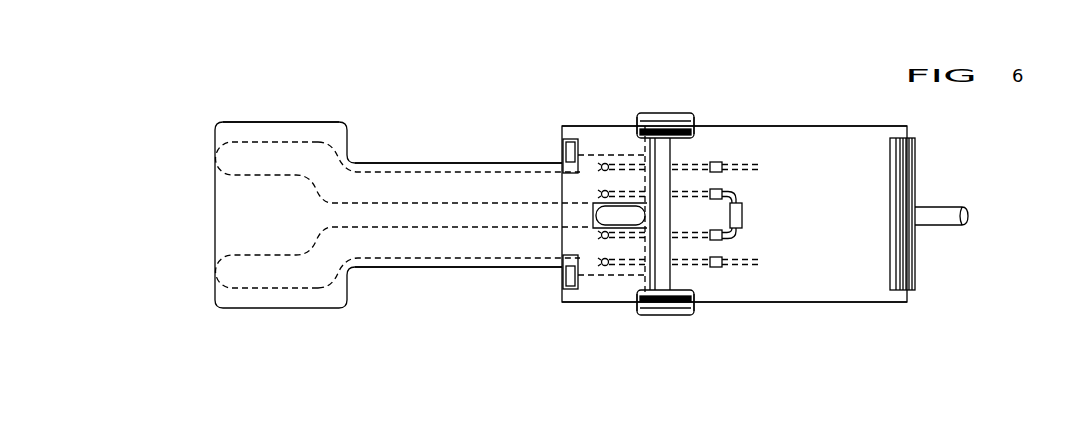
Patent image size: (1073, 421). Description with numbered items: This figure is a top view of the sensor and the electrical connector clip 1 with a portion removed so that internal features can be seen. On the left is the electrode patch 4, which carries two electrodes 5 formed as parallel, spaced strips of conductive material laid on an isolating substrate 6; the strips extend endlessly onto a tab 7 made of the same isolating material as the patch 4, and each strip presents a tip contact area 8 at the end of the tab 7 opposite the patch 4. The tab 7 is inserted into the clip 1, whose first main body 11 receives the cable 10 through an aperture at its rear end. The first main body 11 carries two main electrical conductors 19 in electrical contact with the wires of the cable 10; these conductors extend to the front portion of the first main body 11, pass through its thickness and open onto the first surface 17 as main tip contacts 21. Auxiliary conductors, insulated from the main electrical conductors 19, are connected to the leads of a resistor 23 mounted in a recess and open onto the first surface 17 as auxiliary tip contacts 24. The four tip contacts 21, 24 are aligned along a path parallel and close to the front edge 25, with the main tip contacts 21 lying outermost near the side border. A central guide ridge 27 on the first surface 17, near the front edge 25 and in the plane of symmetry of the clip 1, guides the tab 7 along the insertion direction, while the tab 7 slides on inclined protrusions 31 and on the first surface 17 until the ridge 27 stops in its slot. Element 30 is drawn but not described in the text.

The electrical connector clip 1 is at (750, 119).
The electrode patch 4 is at (290, 309).
The electrodes 5 is at (246, 160).
The isolating substrate 6 is at (338, 122).
The tab 7 is at (398, 275).
The tip contact area 8 is at (674, 112).
The cable 10 is at (939, 226).
The first main body 11 is at (768, 302).
The first surface 17 is at (614, 140).
The main electrical conductors 19 is at (714, 160).
The main tip contacts 21 is at (603, 164).
The resistor 23 is at (745, 207).
The auxiliary tip contacts 24 is at (600, 193).
The front edge 25 is at (590, 217).
The central guide ridge 27 is at (680, 316).
The cap rim 30 is at (636, 125).
The inclined protrusions 31 is at (563, 288).